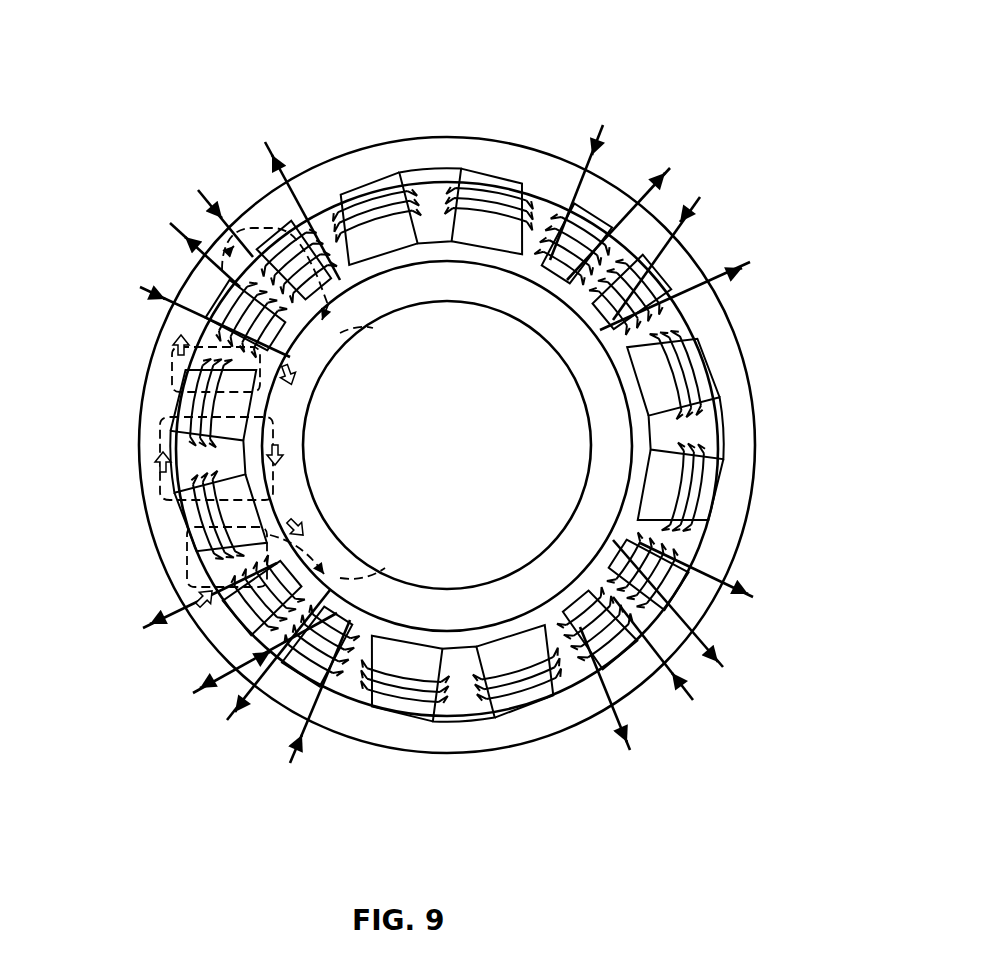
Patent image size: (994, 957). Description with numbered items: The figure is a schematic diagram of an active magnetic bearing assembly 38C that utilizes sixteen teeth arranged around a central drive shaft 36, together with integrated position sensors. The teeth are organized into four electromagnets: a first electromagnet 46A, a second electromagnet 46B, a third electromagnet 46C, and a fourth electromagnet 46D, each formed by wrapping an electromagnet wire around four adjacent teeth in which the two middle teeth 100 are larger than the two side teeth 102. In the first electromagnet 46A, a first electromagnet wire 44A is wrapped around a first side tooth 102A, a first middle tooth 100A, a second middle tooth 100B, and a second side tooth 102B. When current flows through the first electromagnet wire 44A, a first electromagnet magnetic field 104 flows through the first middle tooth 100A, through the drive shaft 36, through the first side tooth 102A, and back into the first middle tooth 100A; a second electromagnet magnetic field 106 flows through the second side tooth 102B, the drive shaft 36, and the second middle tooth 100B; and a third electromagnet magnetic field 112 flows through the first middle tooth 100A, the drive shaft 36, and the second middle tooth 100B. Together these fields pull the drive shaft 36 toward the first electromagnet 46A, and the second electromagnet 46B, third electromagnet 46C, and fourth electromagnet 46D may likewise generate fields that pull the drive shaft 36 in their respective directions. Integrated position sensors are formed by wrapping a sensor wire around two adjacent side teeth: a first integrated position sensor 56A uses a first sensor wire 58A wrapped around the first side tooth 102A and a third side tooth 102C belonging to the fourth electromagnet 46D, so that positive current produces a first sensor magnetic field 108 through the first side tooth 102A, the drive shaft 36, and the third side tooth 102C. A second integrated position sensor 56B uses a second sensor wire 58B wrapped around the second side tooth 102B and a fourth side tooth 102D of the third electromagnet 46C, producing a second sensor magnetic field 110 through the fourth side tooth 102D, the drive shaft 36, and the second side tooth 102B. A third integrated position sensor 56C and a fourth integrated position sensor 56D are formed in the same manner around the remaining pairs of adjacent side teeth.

The drive shaft 36 is at (625, 525).
The active magnetic bearing assembly 38C is at (156, 70).
The first electromagnet wire 44A is at (222, 657).
The first electromagnet 46A is at (80, 260).
The second electromagnet 46B is at (800, 253).
The third electromagnet 46C is at (251, 103).
The fourth electromagnet 46D is at (290, 777).
The first integrated position sensor 56A is at (157, 673).
The second integrated position sensor 56B is at (140, 240).
The third integrated position sensor 56C is at (643, 733).
The fourth integrated position sensor 56D is at (627, 133).
The first sensor wire 58A is at (290, 760).
The second sensor wire 58B is at (150, 287).
The middle teeth 100 is at (632, 405).
The first middle tooth 100A is at (273, 493).
The second middle tooth 100B is at (262, 418).
The side teeth 102 is at (605, 318).
The first side tooth 102A is at (293, 543).
The second side tooth 102B is at (305, 345).
The third side tooth 102C is at (363, 603).
The fourth side tooth 102D is at (345, 280).
The first electromagnet magnetic field 104 is at (197, 597).
The second electromagnet magnetic field 106 is at (172, 345).
The first sensor magnetic field 108 is at (385, 568).
The second sensor magnetic field 110 is at (373, 328).
The third electromagnet magnetic field 112 is at (150, 462).